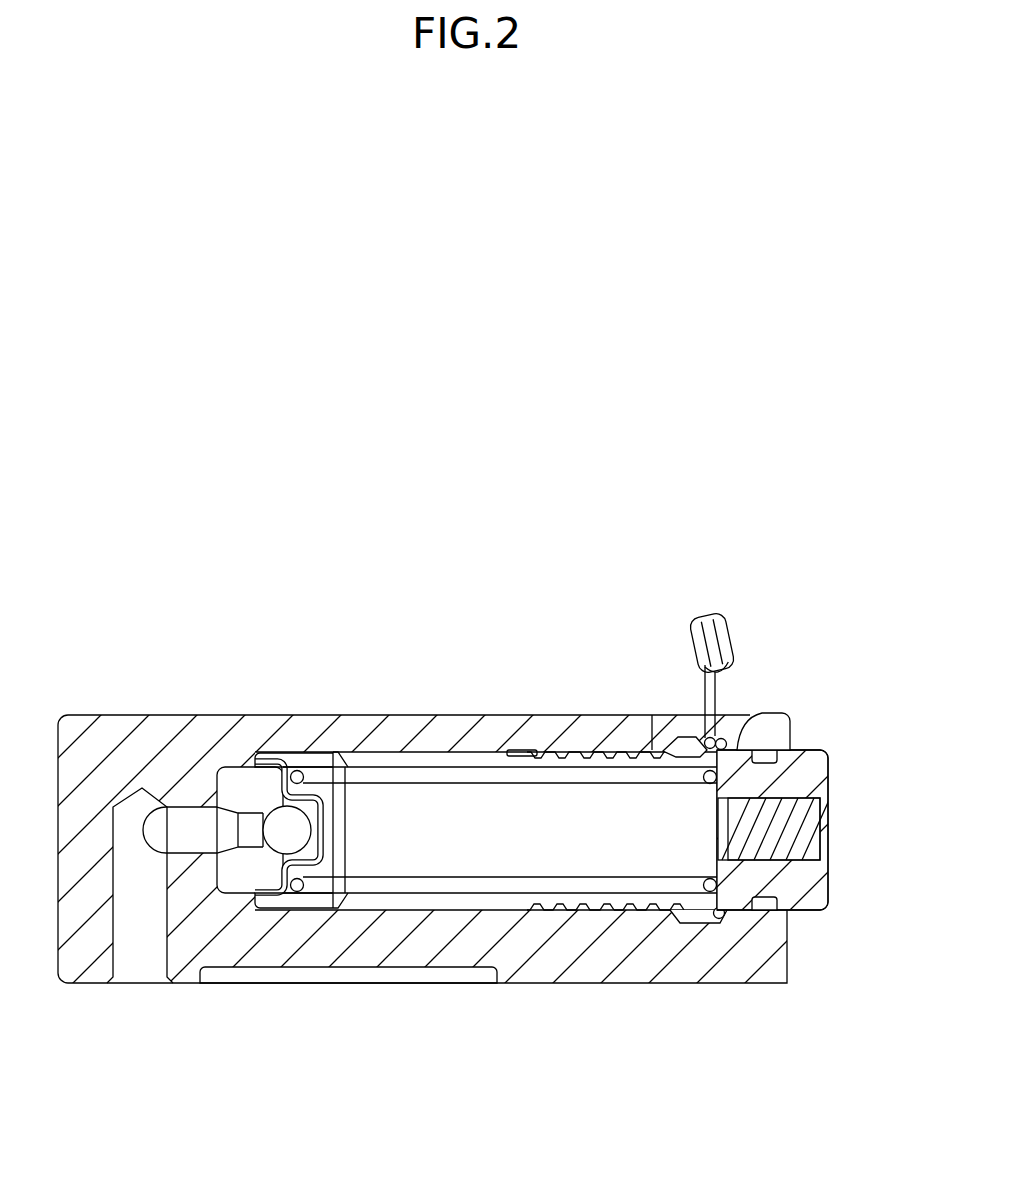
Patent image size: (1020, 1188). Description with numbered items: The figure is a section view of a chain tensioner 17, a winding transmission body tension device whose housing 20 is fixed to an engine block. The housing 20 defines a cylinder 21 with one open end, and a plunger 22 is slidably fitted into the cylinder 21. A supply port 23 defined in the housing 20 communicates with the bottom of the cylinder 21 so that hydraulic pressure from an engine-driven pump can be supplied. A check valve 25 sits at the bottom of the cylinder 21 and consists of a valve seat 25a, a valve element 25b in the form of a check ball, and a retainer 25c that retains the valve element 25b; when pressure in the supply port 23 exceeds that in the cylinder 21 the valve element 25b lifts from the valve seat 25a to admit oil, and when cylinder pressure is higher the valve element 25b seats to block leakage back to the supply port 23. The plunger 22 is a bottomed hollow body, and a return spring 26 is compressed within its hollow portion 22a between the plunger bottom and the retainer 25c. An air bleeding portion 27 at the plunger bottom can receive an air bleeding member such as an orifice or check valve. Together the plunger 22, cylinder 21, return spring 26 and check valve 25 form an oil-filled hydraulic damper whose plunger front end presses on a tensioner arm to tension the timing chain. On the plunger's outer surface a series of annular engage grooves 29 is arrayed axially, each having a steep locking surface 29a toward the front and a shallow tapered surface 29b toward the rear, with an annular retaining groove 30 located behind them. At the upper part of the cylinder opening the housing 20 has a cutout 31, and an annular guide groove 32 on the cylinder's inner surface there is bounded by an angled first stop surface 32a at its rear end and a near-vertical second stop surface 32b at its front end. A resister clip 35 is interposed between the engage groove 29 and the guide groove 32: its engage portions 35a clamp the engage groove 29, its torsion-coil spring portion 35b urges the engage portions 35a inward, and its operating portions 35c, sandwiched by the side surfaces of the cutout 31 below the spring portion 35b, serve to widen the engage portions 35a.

The chain tensioner 17 is at (376, 540).
The housing 20 is at (123, 720).
The cylinder 21 is at (297, 755).
The plunger 22 is at (432, 762).
The hollow portion 22a is at (470, 772).
The supply port 23 is at (117, 932).
The check valve 25 is at (232, 752).
The valve seat 25a is at (263, 780).
The valve element 25b is at (303, 828).
The retainer 25c is at (293, 895).
The return spring 26 is at (413, 892).
The air bleeding portion 27 is at (827, 813).
The engage grooves 29 is at (562, 752).
The locking surface 29a is at (627, 910).
The tapered surface 29b is at (582, 910).
The retaining groove 30 is at (530, 750).
The cutout 31 is at (777, 730).
The guide groove 32 is at (682, 745).
The first stop surface 32a is at (702, 913).
The second stop surface 32b is at (712, 923).
The resister clip 35 is at (762, 634).
The engage portions 35a is at (723, 738).
The spring portion 35b is at (708, 613).
The operating portions 35c is at (717, 698).